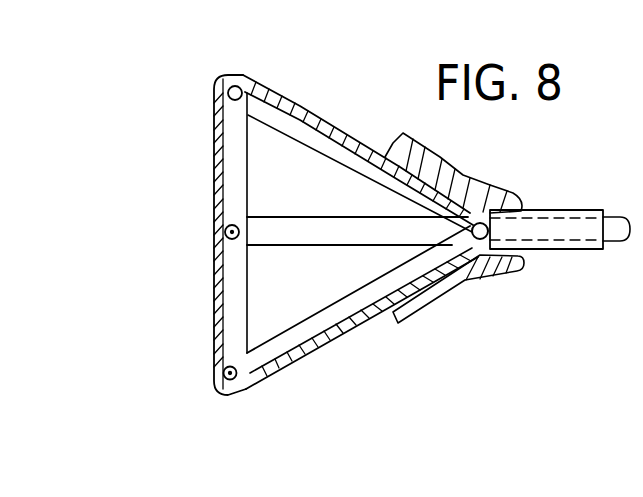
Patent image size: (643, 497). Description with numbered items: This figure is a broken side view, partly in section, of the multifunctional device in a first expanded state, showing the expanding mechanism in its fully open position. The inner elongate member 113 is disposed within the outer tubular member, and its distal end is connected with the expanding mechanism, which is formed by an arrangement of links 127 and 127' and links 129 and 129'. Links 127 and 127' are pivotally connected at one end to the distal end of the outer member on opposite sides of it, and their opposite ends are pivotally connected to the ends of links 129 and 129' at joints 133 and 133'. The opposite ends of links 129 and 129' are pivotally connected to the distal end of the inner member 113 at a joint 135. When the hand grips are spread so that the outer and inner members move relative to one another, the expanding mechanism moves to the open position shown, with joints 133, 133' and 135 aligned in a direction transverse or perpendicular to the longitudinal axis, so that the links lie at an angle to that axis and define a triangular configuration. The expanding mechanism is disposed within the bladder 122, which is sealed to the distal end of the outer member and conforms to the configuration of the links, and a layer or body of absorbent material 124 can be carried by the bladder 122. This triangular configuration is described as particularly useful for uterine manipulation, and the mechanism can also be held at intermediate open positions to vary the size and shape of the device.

The inner elongate member 113 is at (304, 213).
The bladder 122 is at (328, 347).
The absorbent material 124 is at (517, 198).
The link 127 is at (439, 324).
The link 127' is at (453, 164).
The link 129 is at (173, 235).
The link 129' is at (161, 234).
The joint 133 is at (260, 407).
The joint 133' is at (350, 128).
The joint 135 is at (213, 237).